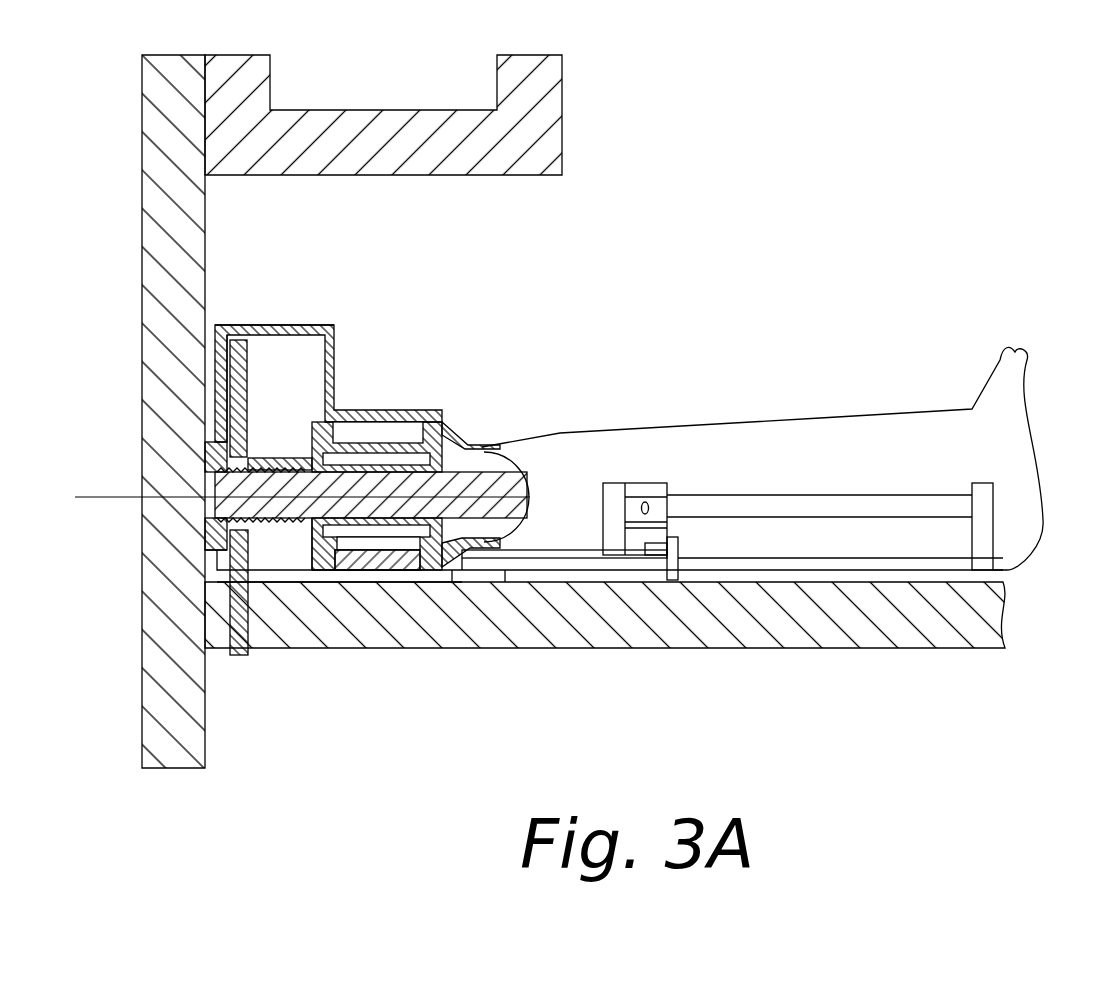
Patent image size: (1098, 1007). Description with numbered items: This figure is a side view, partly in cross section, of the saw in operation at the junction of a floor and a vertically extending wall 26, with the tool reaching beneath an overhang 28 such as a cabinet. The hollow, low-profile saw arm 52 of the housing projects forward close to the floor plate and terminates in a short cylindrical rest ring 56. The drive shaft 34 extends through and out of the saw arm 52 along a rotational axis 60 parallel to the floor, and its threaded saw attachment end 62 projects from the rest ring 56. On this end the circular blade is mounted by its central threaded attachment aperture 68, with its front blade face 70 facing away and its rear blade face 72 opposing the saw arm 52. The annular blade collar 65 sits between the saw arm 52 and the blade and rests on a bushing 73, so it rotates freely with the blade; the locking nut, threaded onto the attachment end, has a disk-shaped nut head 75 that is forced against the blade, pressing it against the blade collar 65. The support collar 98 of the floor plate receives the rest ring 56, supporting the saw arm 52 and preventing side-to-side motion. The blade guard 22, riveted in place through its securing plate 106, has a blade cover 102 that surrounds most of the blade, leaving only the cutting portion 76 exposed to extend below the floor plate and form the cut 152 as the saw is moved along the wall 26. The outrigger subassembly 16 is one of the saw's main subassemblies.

The outrigger subassembly 16 is at (742, 465).
The blade guard 22 is at (331, 325).
The wall 26 is at (190, 205).
The overhang 28 is at (366, 140).
The drive shaft 34 is at (468, 470).
The saw arm 52 is at (732, 512).
The rest ring 56 is at (320, 563).
The rotational axis 60 is at (95, 497).
The threaded saw attachment end 62 is at (217, 503).
The blade collar 65 is at (312, 520).
The central threaded attachment aperture 68 is at (227, 582).
The front blade face 70 is at (260, 353).
The rear blade face 72 is at (243, 345).
The bushing 73 is at (297, 460).
The nut head 75 is at (217, 453).
The cutting portion 76 is at (243, 652).
The support collar 98 is at (393, 565).
The blade cover 102 is at (275, 325).
The securing plate 106 is at (378, 417).
The cut 152 is at (240, 632).